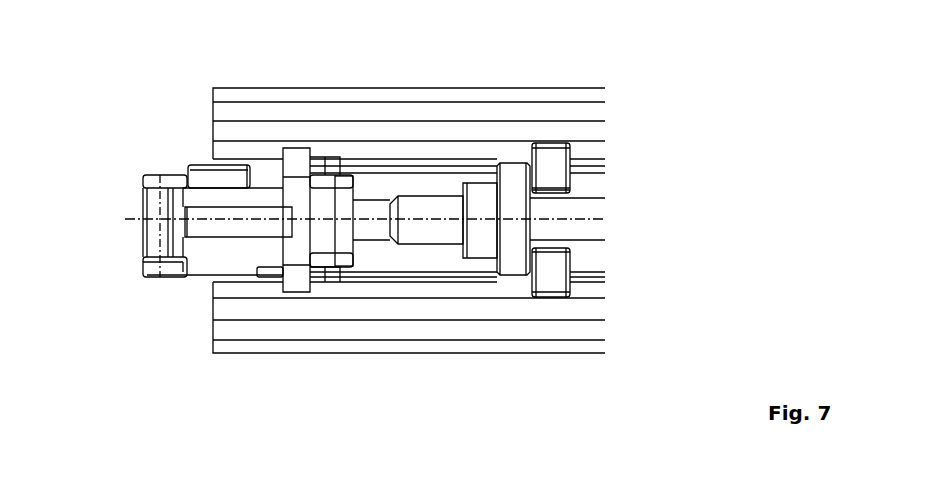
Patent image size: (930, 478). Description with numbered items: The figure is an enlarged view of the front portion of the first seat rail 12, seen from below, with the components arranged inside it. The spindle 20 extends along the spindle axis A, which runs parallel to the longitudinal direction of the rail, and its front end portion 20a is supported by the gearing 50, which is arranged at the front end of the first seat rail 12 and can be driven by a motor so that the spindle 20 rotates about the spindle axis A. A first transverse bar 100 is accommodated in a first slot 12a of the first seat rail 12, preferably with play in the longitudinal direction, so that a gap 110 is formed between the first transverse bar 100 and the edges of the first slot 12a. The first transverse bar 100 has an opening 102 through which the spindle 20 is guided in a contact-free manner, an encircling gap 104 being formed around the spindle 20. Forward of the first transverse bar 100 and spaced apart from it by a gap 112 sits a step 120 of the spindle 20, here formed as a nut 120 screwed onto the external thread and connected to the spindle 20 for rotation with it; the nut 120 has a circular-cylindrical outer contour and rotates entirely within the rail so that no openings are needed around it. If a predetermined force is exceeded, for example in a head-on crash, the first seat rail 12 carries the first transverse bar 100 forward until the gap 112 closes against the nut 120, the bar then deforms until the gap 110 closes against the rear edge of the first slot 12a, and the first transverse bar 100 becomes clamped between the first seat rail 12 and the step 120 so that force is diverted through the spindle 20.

The first seat rail 12 is at (253, 113).
The first slot 12a is at (550, 143).
The spindle 20 is at (376, 136).
The front end portion 20a is at (420, 205).
The gearing 50 is at (197, 187).
The first transverse bar 100 is at (553, 175).
The opening 102 is at (558, 248).
The encircling gap 104 is at (553, 195).
The gap 110 is at (570, 157).
The gap 112 is at (533, 264).
The step 120 is at (503, 210).
The spindle axis A is at (130, 218).